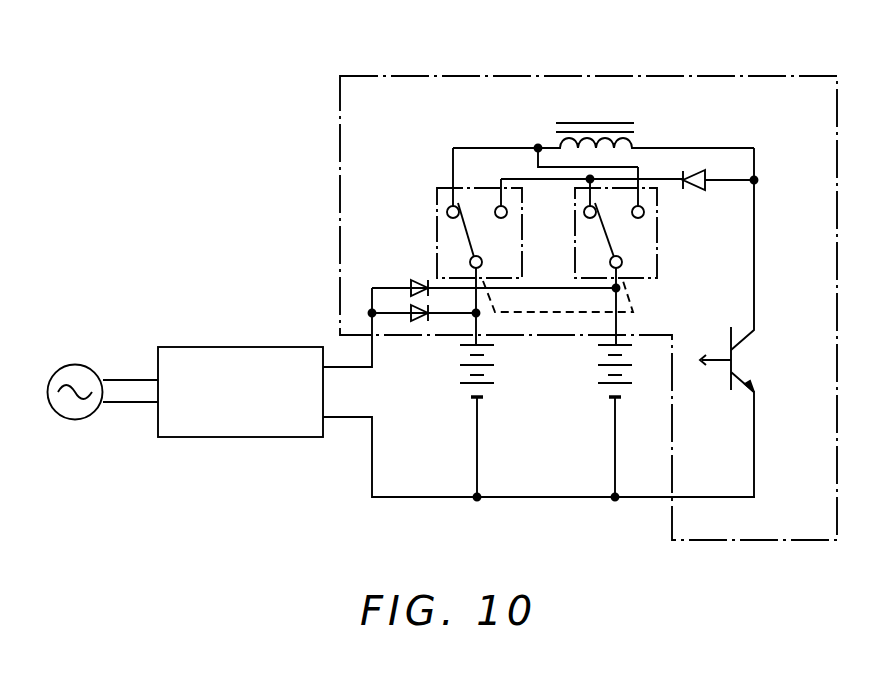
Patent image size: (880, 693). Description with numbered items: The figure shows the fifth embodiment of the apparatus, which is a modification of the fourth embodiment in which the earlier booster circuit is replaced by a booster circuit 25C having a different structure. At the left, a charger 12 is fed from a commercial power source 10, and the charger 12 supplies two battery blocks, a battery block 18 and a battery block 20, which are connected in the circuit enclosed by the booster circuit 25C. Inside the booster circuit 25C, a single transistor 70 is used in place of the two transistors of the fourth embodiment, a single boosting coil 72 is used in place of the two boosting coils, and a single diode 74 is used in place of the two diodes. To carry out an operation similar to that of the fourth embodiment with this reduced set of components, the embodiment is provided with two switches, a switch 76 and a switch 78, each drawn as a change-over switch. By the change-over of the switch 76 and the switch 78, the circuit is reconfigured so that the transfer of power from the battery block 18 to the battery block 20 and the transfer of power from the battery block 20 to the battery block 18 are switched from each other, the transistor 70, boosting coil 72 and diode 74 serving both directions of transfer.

The commercial power source 10 is at (81, 365).
The charger 12 is at (251, 346).
The battery block 18 is at (455, 377).
The battery block 20 is at (591, 365).
The booster circuit 25C is at (428, 76).
The transistor 70 is at (745, 365).
The boosting coil 72 is at (606, 121).
The diode 74 is at (697, 195).
The switch 76 is at (436, 257).
The switch 78 is at (658, 272).